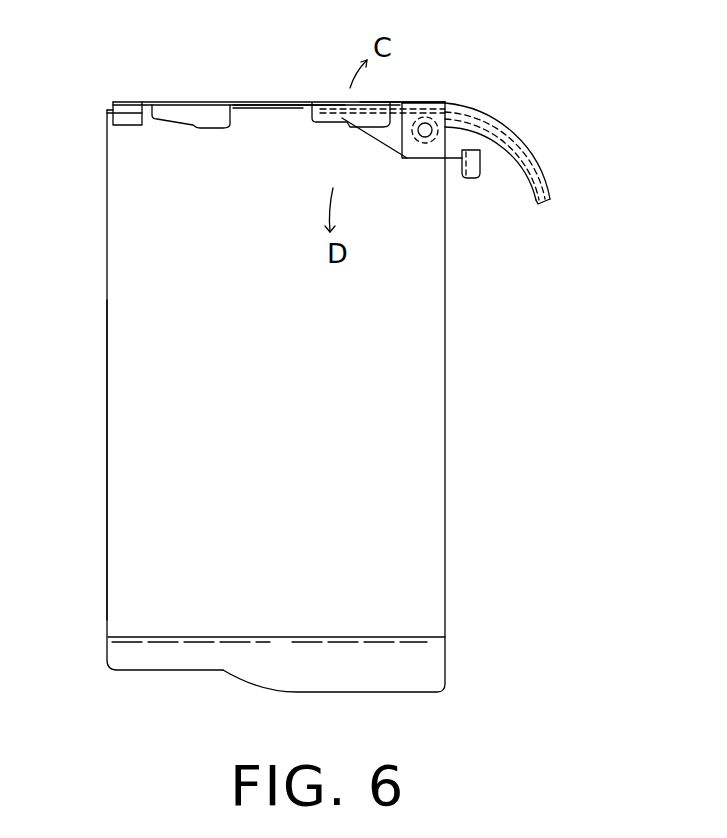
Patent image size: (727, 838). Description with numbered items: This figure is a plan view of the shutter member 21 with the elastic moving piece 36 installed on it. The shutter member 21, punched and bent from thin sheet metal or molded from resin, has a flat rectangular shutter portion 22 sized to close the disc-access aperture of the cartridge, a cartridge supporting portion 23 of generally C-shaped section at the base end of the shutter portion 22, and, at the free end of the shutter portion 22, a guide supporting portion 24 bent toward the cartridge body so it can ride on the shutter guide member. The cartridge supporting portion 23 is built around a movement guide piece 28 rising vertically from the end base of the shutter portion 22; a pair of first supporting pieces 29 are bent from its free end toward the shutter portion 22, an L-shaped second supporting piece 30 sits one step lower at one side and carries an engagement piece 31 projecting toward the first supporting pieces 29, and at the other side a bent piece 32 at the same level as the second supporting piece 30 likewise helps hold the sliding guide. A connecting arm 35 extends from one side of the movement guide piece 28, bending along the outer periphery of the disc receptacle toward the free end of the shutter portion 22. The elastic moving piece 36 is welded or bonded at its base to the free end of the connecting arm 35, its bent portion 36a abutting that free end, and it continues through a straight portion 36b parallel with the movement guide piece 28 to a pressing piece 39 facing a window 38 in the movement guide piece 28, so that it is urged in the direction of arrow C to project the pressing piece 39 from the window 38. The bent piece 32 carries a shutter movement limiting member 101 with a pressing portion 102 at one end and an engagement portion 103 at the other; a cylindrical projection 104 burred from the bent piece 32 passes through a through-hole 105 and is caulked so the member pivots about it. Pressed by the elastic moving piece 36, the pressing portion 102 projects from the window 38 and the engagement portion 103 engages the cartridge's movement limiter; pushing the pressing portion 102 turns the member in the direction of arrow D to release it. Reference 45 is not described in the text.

The shutter member 21 is at (430, 493).
The shutter portion 22 is at (118, 445).
The cartridge supporting portion 23 is at (170, 102).
The guide supporting portion 24 is at (432, 667).
The movement guide piece 28 is at (263, 100).
The first supporting pieces 29 is at (207, 117).
The second supporting piece 30 is at (122, 112).
The engagement piece 31 is at (122, 127).
The bent piece 32 is at (411, 160).
The connecting arm 35 is at (527, 147).
The elastic moving piece 36 is at (510, 183).
The bent portion 36a is at (543, 200).
The straight portion 36b is at (400, 98).
The window 38 is at (273, 107).
The pressing piece 39 is at (337, 100).
The engaging portion 45 is at (367, 100).
The shutter movement limiting member 101 is at (460, 140).
The pressing portion 102 is at (330, 100).
The engagement portion 103 is at (470, 183).
The cylindrical projection 104 is at (402, 140).
The through-hole 105 is at (434, 143).